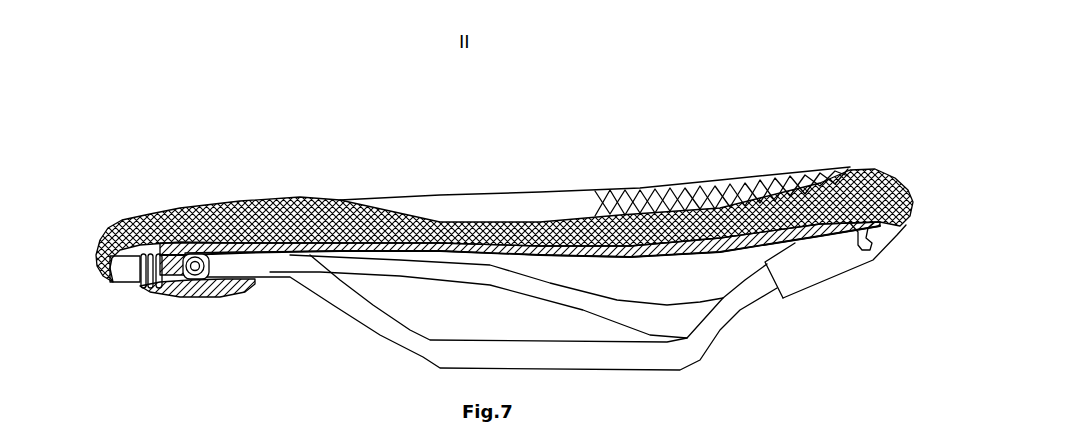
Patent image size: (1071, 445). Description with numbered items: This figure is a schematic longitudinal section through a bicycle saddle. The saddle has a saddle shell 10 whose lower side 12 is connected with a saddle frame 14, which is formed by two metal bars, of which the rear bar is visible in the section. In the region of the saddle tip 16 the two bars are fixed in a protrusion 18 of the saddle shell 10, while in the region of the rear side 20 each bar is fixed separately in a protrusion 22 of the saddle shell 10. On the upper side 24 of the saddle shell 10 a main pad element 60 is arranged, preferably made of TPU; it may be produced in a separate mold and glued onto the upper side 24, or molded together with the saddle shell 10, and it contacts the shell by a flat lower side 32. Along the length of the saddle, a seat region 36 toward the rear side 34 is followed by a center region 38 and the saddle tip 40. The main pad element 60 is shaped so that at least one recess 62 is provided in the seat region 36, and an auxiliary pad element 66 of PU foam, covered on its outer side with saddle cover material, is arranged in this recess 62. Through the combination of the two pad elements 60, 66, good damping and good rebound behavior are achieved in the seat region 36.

The saddle shell 10 is at (320, 270).
The lower side 12 is at (320, 249).
The saddle frame 14 is at (437, 350).
The saddle tip 16 is at (150, 293).
The protrusion 18 is at (178, 285).
The rear side 20 is at (860, 278).
The protrusion 22 is at (815, 265).
The upper side 24 is at (514, 222).
The lower side 32 is at (673, 257).
The rear side 34 is at (892, 163).
The seat region 36 is at (637, 103).
The center region 38 is at (630, 103).
The saddle tip 40 is at (312, 103).
The main pad element 60 is at (453, 218).
The recess 62 is at (618, 200).
The auxiliary pad element 66 is at (722, 196).